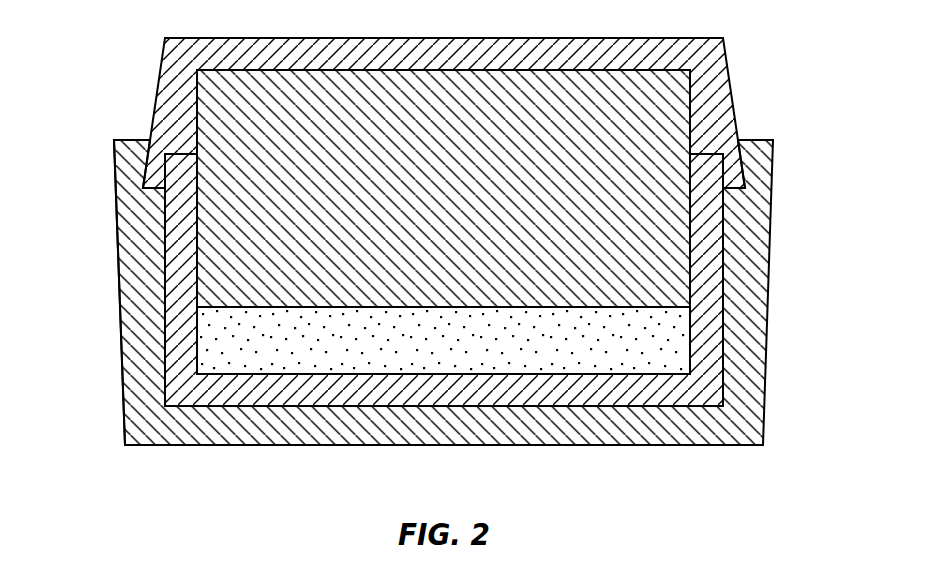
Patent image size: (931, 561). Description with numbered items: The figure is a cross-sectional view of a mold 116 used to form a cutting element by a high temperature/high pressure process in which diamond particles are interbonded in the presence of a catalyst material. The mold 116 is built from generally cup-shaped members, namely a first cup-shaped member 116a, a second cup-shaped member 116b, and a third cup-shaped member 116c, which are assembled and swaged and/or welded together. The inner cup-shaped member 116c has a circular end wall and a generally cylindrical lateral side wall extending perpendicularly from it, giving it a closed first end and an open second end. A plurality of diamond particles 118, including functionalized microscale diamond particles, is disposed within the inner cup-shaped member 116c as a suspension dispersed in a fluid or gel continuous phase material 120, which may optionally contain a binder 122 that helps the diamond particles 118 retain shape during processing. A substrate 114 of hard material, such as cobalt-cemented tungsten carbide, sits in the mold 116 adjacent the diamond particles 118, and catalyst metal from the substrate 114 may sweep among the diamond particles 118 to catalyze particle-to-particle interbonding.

The substrate 114 is at (653, 108).
The mold 116 is at (92, 383).
The first cup-shaped member 116a is at (178, 103).
The second cup-shaped member 116b is at (138, 264).
The third cup-shaped member 116c is at (329, 393).
The plurality of diamond particles 118 is at (670, 357).
The fluid or gel continuous phase material 120 is at (632, 330).
The binder 122 is at (555, 330).